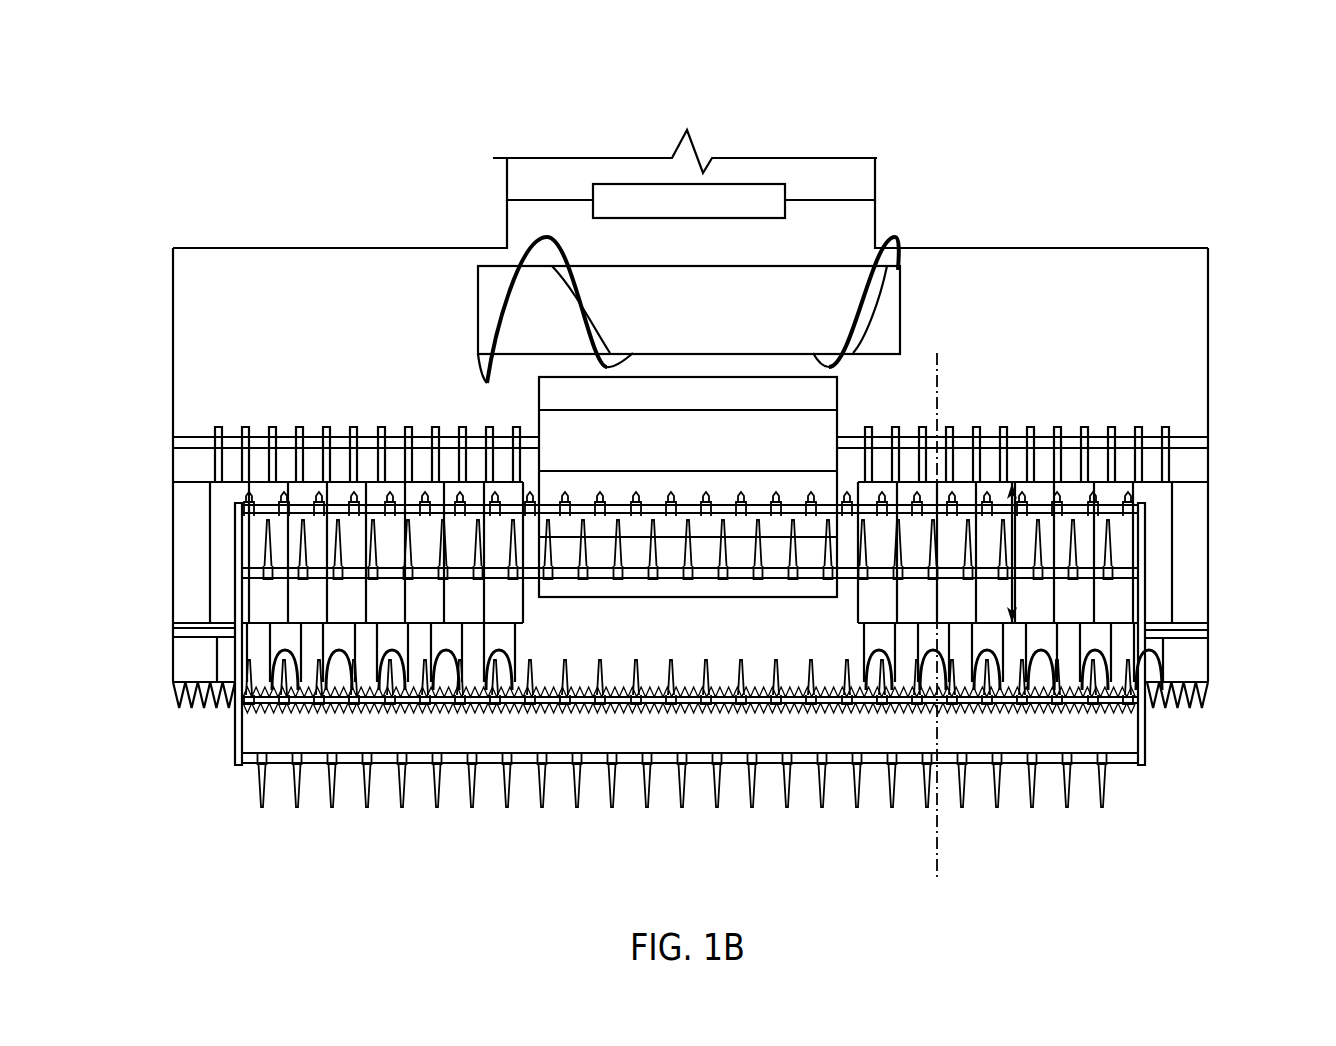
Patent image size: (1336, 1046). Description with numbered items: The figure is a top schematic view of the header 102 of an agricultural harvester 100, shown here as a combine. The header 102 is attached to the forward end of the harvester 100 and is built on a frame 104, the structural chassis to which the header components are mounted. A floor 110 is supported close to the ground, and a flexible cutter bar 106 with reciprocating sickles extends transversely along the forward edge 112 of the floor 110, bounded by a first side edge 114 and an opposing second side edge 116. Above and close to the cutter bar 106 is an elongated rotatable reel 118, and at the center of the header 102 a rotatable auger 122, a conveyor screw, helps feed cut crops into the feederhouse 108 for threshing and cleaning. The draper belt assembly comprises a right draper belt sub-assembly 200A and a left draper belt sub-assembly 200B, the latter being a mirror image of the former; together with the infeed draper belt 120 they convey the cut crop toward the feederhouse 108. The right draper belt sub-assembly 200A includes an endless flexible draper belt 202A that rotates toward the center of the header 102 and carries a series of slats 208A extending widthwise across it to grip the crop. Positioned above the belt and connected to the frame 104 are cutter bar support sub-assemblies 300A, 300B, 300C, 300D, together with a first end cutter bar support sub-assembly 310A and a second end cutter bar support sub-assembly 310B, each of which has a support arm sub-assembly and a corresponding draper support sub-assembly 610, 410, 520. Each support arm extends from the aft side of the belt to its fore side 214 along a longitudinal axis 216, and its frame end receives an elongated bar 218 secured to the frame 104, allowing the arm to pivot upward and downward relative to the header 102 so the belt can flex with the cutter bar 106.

The agricultural harvester 100 is at (583, 173).
The header 102 is at (258, 145).
The frame 104 is at (1035, 249).
The cutter bar 106 is at (185, 710).
The feederhouse 108 is at (755, 193).
The floor 110 is at (192, 662).
The forward edge 112 is at (548, 677).
The first side edge 114 is at (1208, 325).
The second side edge 116 is at (173, 325).
The reel 118 is at (238, 747).
The infeed draper belt 120 is at (838, 397).
The auger 122 is at (833, 262).
The right draper belt sub-assembly 200A is at (1174, 508).
The left draper belt sub-assembly 200B is at (197, 478).
The draper belt 202A is at (1188, 552).
The slats 208A is at (1173, 587).
The fore side 214 is at (1148, 478).
The longitudinal axis 216 is at (940, 858).
The elongated bar 218 is at (942, 437).
The cutter bar support sub-assembly 300A is at (877, 640).
The cutter bar support sub-assembly 300B is at (968, 648).
The cutter bar support sub-assembly 300C is at (1018, 650).
The cutter bar support sub-assembly 300D is at (1078, 648).
The first end cutter bar support sub-assembly 310A is at (860, 643).
The second end cutter bar support sub-assembly 310B is at (1166, 650).
The draper support sub-assembly 410 is at (908, 655).
The draper support sub-assembly 520 is at (1160, 658).
The draper support sub-assembly 610 is at (928, 648).